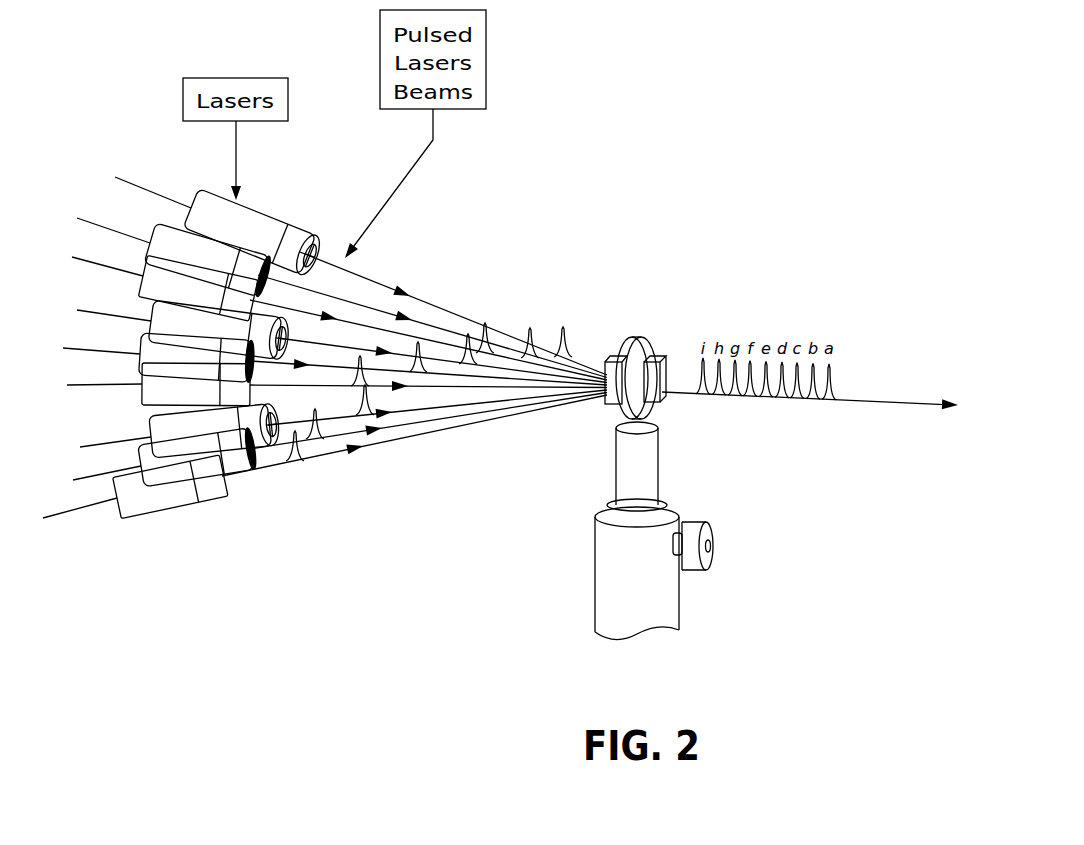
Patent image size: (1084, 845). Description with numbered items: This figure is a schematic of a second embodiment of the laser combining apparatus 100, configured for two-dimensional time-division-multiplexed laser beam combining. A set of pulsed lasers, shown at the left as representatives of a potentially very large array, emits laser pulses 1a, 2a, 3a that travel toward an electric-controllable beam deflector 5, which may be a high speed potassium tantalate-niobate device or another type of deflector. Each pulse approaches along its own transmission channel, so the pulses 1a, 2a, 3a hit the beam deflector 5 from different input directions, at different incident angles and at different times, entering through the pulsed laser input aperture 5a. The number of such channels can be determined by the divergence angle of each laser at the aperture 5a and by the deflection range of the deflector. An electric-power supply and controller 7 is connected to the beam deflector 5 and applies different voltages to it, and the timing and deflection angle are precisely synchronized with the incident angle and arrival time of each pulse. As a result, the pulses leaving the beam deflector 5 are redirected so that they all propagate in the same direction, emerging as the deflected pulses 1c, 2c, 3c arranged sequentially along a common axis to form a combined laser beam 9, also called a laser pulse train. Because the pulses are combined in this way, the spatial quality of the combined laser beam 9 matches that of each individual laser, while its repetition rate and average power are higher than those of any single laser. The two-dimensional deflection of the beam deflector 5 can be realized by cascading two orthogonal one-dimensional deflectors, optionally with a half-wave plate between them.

The laser combining apparatus 100 is at (749, 203).
The laser pulse 1a is at (375, 277).
The laser pulse 2a is at (438, 373).
The laser pulse 3a is at (340, 438).
The beam deflector 5 is at (652, 352).
The aperture of the beam deflector 5a is at (499, 572).
The electric-power supply and controller 7 is at (680, 612).
The combined laser beam 9 is at (858, 357).
The deflected pulse 1c is at (830, 397).
The deflected pulse 2c is at (766, 394).
The deflected pulse 3c is at (718, 392).